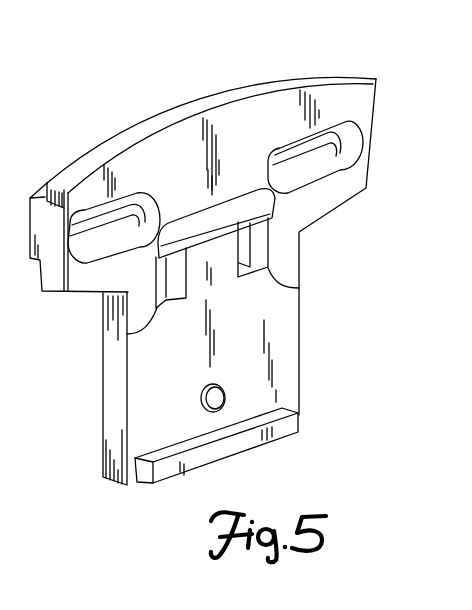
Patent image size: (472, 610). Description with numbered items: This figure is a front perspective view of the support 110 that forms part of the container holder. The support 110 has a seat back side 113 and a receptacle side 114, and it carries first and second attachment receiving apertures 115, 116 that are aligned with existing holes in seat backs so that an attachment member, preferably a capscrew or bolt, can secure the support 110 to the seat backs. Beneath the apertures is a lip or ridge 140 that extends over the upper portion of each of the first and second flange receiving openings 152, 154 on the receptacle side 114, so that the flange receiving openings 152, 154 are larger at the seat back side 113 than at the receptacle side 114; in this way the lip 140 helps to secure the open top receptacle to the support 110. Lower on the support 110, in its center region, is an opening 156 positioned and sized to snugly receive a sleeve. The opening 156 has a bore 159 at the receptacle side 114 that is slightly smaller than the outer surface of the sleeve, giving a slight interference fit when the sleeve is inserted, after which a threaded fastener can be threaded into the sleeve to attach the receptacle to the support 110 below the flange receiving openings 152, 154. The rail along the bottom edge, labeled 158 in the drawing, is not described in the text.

The support 110 is at (318, 49).
The seat back side 113 is at (88, 152).
The receptacle side 114 is at (364, 95).
The first attachment receiving aperture 115 is at (150, 196).
The second attachment receiving aperture 116 is at (277, 147).
The lip or ridge 140 is at (280, 198).
The first flange receiving opening 152 is at (127, 334).
The second flange receiving opening 154 is at (301, 281).
The opening 156 is at (249, 372).
The bottom rail 158 is at (299, 420).
The bore 159 is at (200, 395).